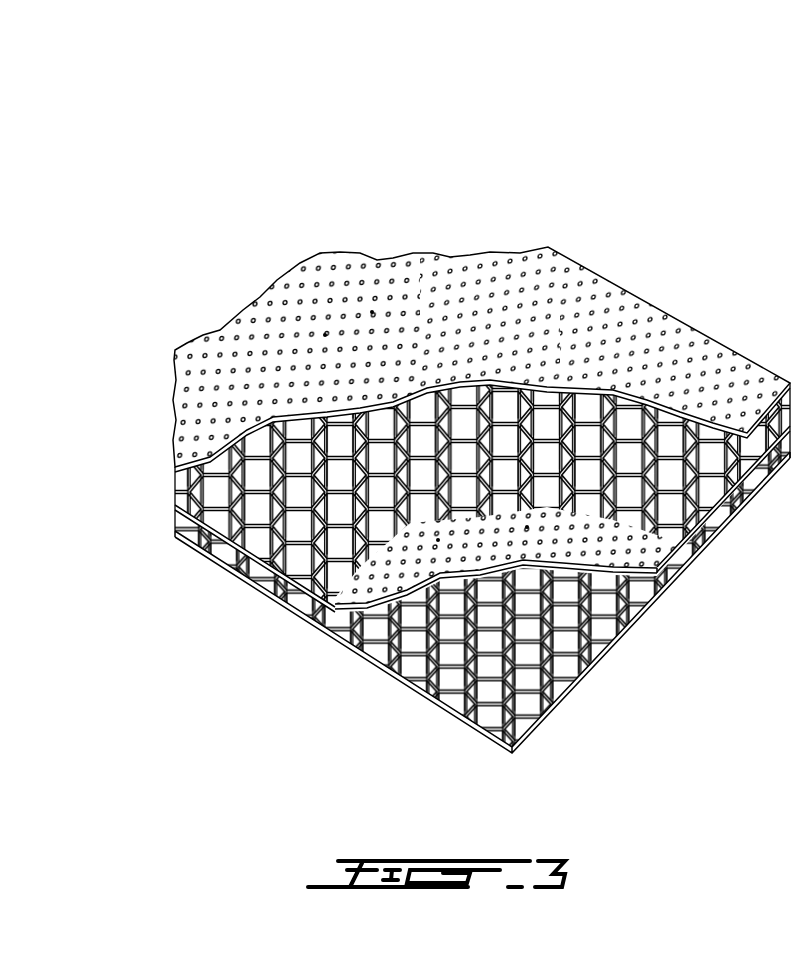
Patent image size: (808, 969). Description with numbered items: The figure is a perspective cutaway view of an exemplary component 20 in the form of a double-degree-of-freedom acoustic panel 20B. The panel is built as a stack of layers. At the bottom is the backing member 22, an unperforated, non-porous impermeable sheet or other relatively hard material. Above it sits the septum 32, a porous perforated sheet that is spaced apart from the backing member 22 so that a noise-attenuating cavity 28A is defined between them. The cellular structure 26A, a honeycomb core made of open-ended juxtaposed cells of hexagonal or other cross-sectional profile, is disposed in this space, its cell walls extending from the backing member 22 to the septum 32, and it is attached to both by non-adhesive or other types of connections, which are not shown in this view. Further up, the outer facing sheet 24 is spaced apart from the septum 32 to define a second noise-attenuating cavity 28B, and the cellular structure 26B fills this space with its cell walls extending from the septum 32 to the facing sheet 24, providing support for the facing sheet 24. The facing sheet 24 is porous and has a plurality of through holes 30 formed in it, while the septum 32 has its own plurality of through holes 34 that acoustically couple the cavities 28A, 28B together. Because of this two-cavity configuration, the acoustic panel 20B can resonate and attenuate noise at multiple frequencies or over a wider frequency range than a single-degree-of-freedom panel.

The component 20 is at (427, 148).
The double-degree-of-freedom acoustic panel 20B is at (434, 493).
The backing member 22 is at (492, 727).
The facing sheet 24 is at (177, 365).
The cellular structure 26A is at (430, 680).
The cellular structure 26B is at (187, 495).
The cavity 28A is at (258, 590).
The cavity 28B is at (205, 530).
The through holes 30 is at (372, 312).
The septum 32 is at (335, 600).
The through holes 34 is at (527, 527).